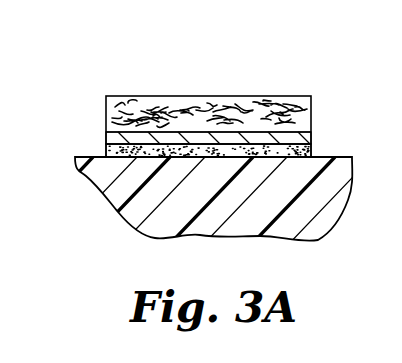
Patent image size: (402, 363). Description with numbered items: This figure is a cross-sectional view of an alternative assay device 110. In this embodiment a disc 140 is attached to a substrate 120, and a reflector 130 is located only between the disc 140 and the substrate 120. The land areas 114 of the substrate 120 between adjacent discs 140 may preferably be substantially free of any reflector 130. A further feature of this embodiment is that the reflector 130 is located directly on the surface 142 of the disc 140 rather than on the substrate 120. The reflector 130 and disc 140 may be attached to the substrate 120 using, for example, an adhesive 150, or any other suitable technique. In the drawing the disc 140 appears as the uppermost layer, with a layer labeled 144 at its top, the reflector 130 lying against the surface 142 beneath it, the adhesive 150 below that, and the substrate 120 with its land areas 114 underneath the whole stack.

The assay device 110 is at (148, 75).
The land areas 114 is at (88, 157).
The substrate 120 is at (210, 222).
The reflector 130 is at (306, 138).
The disc 140 is at (267, 95).
The surface 142 is at (110, 135).
The fibrous top layer 144 is at (200, 96).
The adhesive 150 is at (310, 148).